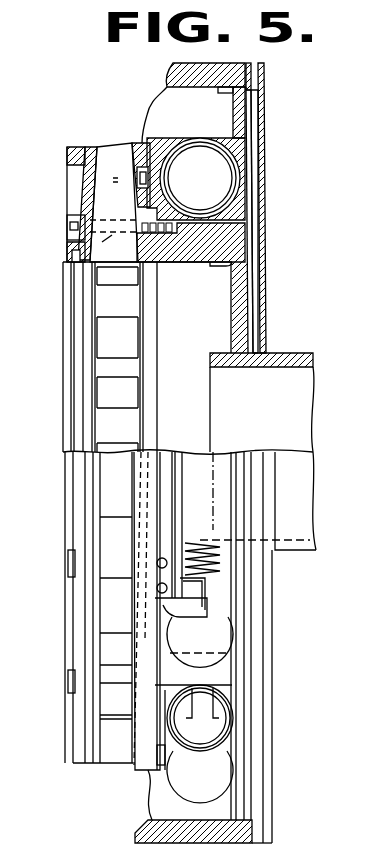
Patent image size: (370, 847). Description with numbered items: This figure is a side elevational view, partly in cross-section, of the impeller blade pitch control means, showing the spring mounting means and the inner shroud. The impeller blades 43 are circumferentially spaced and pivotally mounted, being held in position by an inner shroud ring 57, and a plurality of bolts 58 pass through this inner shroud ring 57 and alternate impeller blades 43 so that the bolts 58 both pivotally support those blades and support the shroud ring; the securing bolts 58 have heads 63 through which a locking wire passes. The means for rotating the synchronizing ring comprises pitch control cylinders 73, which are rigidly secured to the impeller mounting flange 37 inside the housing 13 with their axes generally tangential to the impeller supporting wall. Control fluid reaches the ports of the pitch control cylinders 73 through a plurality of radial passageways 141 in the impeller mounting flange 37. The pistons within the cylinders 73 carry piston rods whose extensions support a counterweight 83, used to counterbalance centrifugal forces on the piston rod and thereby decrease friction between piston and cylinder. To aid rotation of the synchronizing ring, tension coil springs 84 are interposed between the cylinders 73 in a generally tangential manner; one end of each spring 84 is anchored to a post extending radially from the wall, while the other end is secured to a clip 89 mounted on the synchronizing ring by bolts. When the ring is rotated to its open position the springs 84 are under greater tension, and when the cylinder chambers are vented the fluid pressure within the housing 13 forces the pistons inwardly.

The housing 13 is at (244, 62).
The impeller mounting flange 37 is at (262, 258).
The radial passageways 141 is at (255, 300).
The pitch control cylinders 73 is at (193, 150).
The heads 63 is at (139, 147).
The inner shroud ring 57 is at (88, 180).
The impeller blades 43 is at (78, 205).
The bolts 58 is at (100, 246).
The tension coil springs 84 is at (228, 565).
The clip 89 is at (200, 622).
The counterweight 83 is at (225, 667).